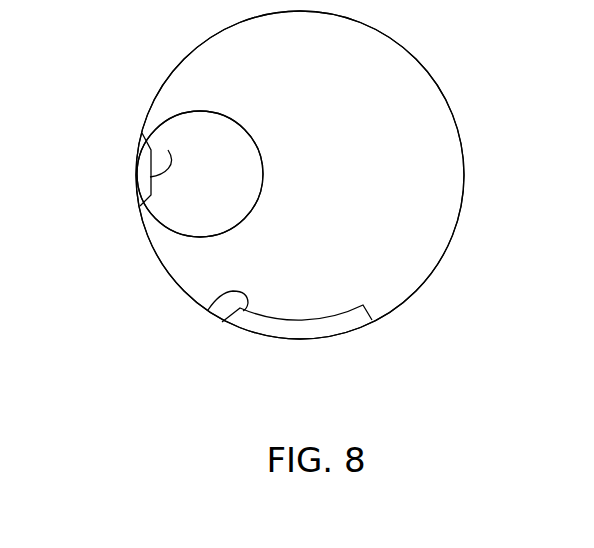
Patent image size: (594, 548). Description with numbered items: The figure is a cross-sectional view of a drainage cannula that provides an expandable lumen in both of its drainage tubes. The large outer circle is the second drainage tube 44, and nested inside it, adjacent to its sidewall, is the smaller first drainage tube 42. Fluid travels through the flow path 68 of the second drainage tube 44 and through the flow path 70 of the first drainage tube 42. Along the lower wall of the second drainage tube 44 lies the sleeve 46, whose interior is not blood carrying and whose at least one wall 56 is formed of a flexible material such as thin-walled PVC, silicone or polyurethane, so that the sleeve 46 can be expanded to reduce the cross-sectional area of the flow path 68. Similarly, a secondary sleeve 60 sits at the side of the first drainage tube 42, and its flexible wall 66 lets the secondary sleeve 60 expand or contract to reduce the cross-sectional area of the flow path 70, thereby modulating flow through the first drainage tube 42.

The second drainage tube 44 is at (463, 172).
The first drainage tube 42 is at (243, 128).
The flow path 68 is at (333, 189).
The flow path 70 is at (184, 189).
The secondary sleeve 60 is at (150, 173).
The wall 66 is at (168, 150).
The sleeve 46 is at (317, 326).
The wall 56 is at (208, 310).